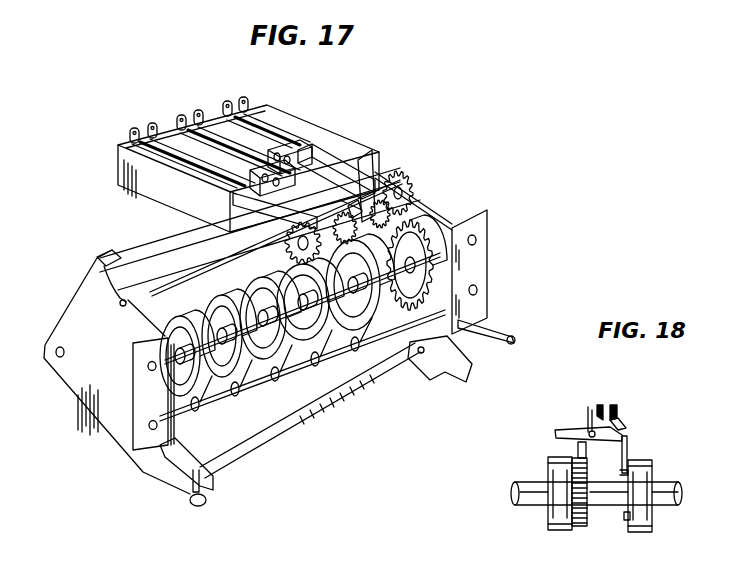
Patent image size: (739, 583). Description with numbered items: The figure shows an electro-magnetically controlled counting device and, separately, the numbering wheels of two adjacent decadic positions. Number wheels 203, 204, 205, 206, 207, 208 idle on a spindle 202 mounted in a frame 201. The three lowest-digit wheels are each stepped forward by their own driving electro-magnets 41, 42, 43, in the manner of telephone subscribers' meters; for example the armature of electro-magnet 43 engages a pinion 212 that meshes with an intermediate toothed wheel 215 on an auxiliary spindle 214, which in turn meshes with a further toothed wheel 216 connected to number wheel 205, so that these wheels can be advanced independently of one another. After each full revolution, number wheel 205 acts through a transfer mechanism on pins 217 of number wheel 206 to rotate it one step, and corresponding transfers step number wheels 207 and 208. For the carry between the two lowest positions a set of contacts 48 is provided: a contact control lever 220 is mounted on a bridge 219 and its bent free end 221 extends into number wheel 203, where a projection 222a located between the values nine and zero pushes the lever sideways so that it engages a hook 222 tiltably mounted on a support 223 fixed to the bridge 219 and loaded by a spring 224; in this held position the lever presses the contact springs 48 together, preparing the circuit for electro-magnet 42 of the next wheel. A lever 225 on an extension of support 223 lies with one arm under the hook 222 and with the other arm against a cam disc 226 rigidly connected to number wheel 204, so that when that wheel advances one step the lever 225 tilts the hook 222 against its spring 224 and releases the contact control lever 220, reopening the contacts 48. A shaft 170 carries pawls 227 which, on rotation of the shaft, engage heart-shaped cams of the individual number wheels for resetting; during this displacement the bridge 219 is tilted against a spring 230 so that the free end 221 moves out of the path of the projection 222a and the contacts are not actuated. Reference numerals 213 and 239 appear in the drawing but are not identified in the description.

In FIG. 17, the driving electro-magnet 41 is at (236, 108).
In FIG. 17, the driving electro-magnet 42 is at (189, 128).
In FIG. 17, the driving electro-magnet 43 is at (150, 137).
In FIG. 17, the set of contacts 48 is at (352, 210).
In FIG. 18, the set of contacts 48 is at (614, 405).
In FIG. 17, the shaft 170 is at (193, 418).
In FIG. 17, the frame 201 is at (85, 387).
In FIG. 18, the spindle 202 is at (520, 490).
In FIG. 17, the number wheel 203 is at (412, 348).
In FIG. 18, the number wheel 203 is at (655, 528).
In FIG. 17, the number wheel 204 is at (352, 330).
In FIG. 18, the number wheel 204 is at (550, 515).
In FIG. 17, the number wheel 205 is at (297, 360).
In FIG. 17, the number wheel 206 is at (263, 357).
In FIG. 17, the number wheel 207 is at (228, 380).
In FIG. 17, the number wheel 208 is at (168, 387).
In FIG. 17, the pinion 212 is at (217, 235).
In FIG. 17, the rail 213 is at (213, 230).
In FIG. 17, the auxiliary spindle 214 is at (112, 256).
In FIG. 17, the intermediate toothed wheel 215 is at (312, 182).
In FIG. 17, the toothed wheel 216 is at (361, 357).
In FIG. 17, the pins 217 is at (313, 330).
In FIG. 17, the bridge 219 is at (150, 157).
In FIG. 17, the contact control lever 220 is at (400, 190).
In FIG. 17, the free end 221 is at (422, 228).
In FIG. 18, the free end 221 is at (629, 452).
In FIG. 17, the hook 222 is at (412, 220).
In FIG. 18, the hook 222 is at (628, 432).
In FIG. 17, the projection 222a is at (430, 300).
In FIG. 18, the projection 222a is at (627, 520).
In FIG. 17, the support 223 is at (342, 198).
In FIG. 18, the support 223 is at (586, 414).
In FIG. 17, the spring 224 is at (388, 180).
In FIG. 18, the lever 225 is at (578, 452).
In FIG. 18, the cam disc 226 is at (625, 415).
In FIG. 17, the pawls 227 is at (257, 367).
In FIG. 17, the spring 230 is at (300, 220).
In FIG. 17, the housing 239 is at (218, 188).